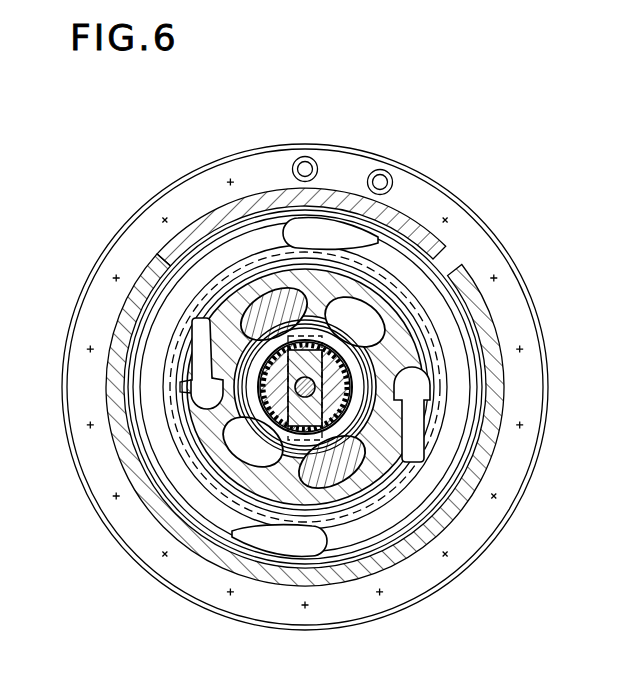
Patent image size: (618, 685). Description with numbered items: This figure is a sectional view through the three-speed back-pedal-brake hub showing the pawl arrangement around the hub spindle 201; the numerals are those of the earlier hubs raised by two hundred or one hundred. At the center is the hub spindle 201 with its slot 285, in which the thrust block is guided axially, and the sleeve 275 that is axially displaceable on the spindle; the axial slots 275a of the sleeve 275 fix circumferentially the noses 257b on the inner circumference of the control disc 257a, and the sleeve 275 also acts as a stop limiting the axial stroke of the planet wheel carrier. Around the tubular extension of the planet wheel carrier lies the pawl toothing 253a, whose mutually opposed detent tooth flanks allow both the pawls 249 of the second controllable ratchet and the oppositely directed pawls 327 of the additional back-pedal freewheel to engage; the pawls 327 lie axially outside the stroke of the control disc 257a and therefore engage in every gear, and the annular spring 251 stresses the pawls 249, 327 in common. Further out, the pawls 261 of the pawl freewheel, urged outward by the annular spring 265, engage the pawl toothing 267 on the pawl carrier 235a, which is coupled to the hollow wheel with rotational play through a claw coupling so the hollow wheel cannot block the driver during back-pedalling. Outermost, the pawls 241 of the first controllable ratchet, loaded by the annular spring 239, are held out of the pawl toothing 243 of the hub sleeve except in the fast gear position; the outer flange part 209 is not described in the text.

The hub spindle 201 is at (455, 500).
The housing flange 209 is at (205, 190).
The pawl carrier 235a is at (207, 285).
The annular spring 239 is at (390, 258).
The pawls 241 is at (330, 225).
The pawl toothing 243 is at (398, 205).
The pawls 249 is at (268, 305).
The annular spring 251 is at (270, 528).
The pawl toothing 253a is at (245, 355).
The control disc 257a is at (250, 435).
The noses 257b is at (300, 470).
The pawls 261 is at (433, 420).
The annular spring 265 is at (365, 470).
The pawl toothing 267 is at (178, 393).
The sleeve 275 is at (322, 352).
The axial slots 275a is at (350, 330).
The slot 285 is at (417, 423).
The pawls 327 is at (353, 313).